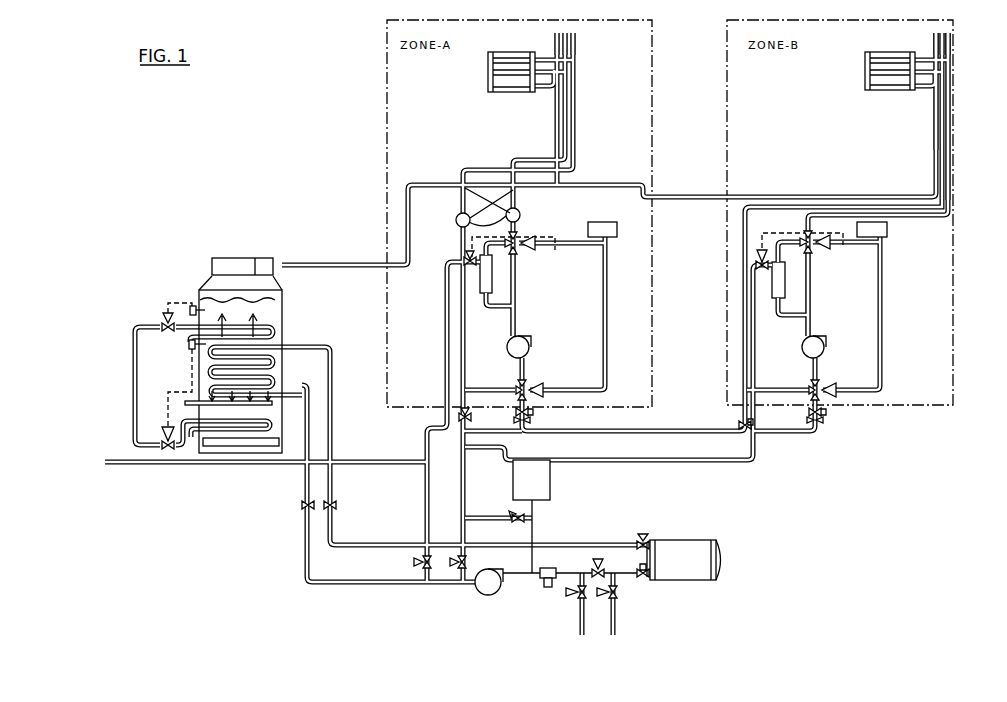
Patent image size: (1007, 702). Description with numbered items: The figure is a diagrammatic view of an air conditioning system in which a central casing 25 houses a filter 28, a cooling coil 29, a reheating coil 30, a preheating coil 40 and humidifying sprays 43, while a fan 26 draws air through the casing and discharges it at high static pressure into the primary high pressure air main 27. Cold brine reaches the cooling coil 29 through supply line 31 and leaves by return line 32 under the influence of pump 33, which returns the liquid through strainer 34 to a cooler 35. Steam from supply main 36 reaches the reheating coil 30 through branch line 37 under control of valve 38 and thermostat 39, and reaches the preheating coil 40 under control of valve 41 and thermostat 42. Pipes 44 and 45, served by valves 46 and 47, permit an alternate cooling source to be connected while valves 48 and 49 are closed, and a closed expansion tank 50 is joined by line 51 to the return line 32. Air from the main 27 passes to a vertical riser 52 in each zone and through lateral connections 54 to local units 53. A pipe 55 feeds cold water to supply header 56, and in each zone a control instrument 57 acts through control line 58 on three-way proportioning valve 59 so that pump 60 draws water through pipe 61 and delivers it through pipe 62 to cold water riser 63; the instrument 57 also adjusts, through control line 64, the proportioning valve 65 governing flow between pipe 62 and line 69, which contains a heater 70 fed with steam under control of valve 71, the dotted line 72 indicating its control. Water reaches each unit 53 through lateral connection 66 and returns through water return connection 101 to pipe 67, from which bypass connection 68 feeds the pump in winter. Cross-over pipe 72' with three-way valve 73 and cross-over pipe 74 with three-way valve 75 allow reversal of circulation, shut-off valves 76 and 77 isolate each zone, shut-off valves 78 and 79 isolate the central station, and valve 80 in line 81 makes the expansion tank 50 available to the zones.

The casing 25 is at (282, 307).
The fan 26 is at (212, 268).
The primary high pressure air main 27 is at (345, 262).
The filter 28 is at (238, 447).
The cooling coil 29 is at (275, 346).
The reheating coil 30 is at (210, 325).
The supply line 31 is at (332, 424).
The return line 32 is at (307, 495).
The pump 33 is at (497, 595).
The strainer 34 is at (547, 588).
The cooler 35 is at (683, 578).
The supply main 36 is at (120, 460).
The branch line 37 is at (135, 360).
The valve 38 is at (165, 330).
The thermostat 39 is at (190, 305).
The preheating coil 40 is at (272, 424).
The valve 41 is at (165, 430).
The thermostat 42 is at (188, 345).
The humidifying sprays 43 is at (272, 404).
The pipe 44 is at (582, 628).
The pipe 45 is at (613, 620).
The valve 46 is at (578, 594).
The valve 47 is at (613, 596).
The valve 48 is at (645, 578).
The valve 49 is at (645, 538).
The closed expansion tank 50 is at (550, 484).
The line 51 is at (533, 525).
The vertical riser 52 is at (555, 137).
The unit 53 is at (488, 78).
The lateral connection 54 is at (563, 117).
The pipe 55 is at (427, 505).
The cold water supply header 56 is at (642, 431).
The control instrument 57 is at (617, 230).
The control line 58 is at (606, 318).
The three-way or proportioning valve 59 is at (530, 386).
The pump 60 is at (524, 340).
The pipe 61 is at (526, 413).
The pipe 62 is at (515, 278).
The cold water riser 63 is at (575, 137).
The control line 64 is at (560, 247).
The proportioning valve 65 is at (520, 250).
The lateral connection 66 is at (554, 47).
The pipe 67 is at (575, 112).
The bypass connection 68 is at (485, 389).
The bypass line 69 is at (506, 308).
The heater 70 is at (483, 290).
The valve 71 is at (466, 258).
The dotted line 72 is at (487, 224).
The cross-over pipe 72' is at (657, 236).
The three-way valve 73 is at (521, 218).
The cross-over pipe 74 is at (508, 204).
The three-way valve 75 is at (456, 224).
The shut-off valve 76 is at (739, 422).
The shut-off valve 77 is at (528, 421).
The shut-off valve 78 is at (413, 562).
The shut-off valve 79 is at (455, 567).
The valve 80 is at (514, 516).
The line 81 is at (490, 518).
The water return connection 101 is at (541, 89).